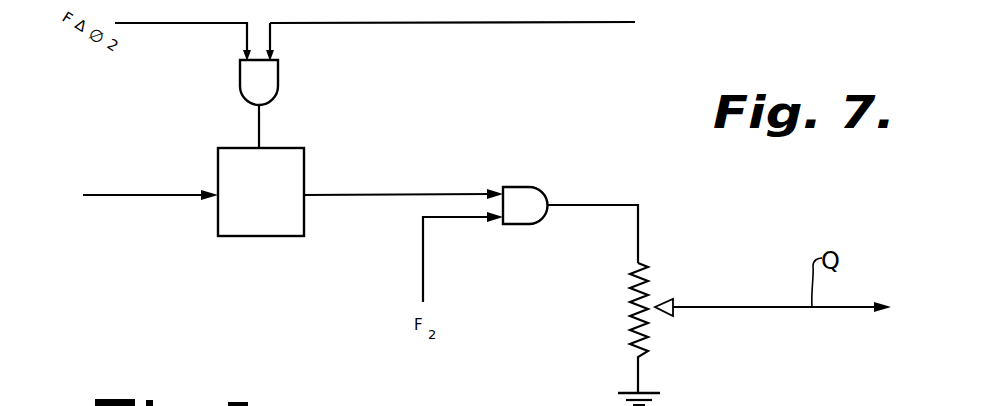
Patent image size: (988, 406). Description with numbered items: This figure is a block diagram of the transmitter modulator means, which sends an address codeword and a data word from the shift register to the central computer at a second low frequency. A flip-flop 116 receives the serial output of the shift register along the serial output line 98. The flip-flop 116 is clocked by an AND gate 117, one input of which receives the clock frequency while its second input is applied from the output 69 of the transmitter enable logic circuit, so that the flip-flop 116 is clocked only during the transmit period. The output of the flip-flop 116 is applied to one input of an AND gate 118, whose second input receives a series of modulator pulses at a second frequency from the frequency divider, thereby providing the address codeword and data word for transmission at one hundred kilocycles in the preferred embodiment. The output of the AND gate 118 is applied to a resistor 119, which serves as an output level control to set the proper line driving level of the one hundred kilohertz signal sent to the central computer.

The output of the transmitter enable logic circuit 69 is at (548, 22).
The AND gate 117 is at (278, 82).
The flip-flop 116 is at (243, 236).
The serial output line 98 is at (106, 195).
The AND gate 118 is at (534, 187).
The resistor 119 is at (645, 282).